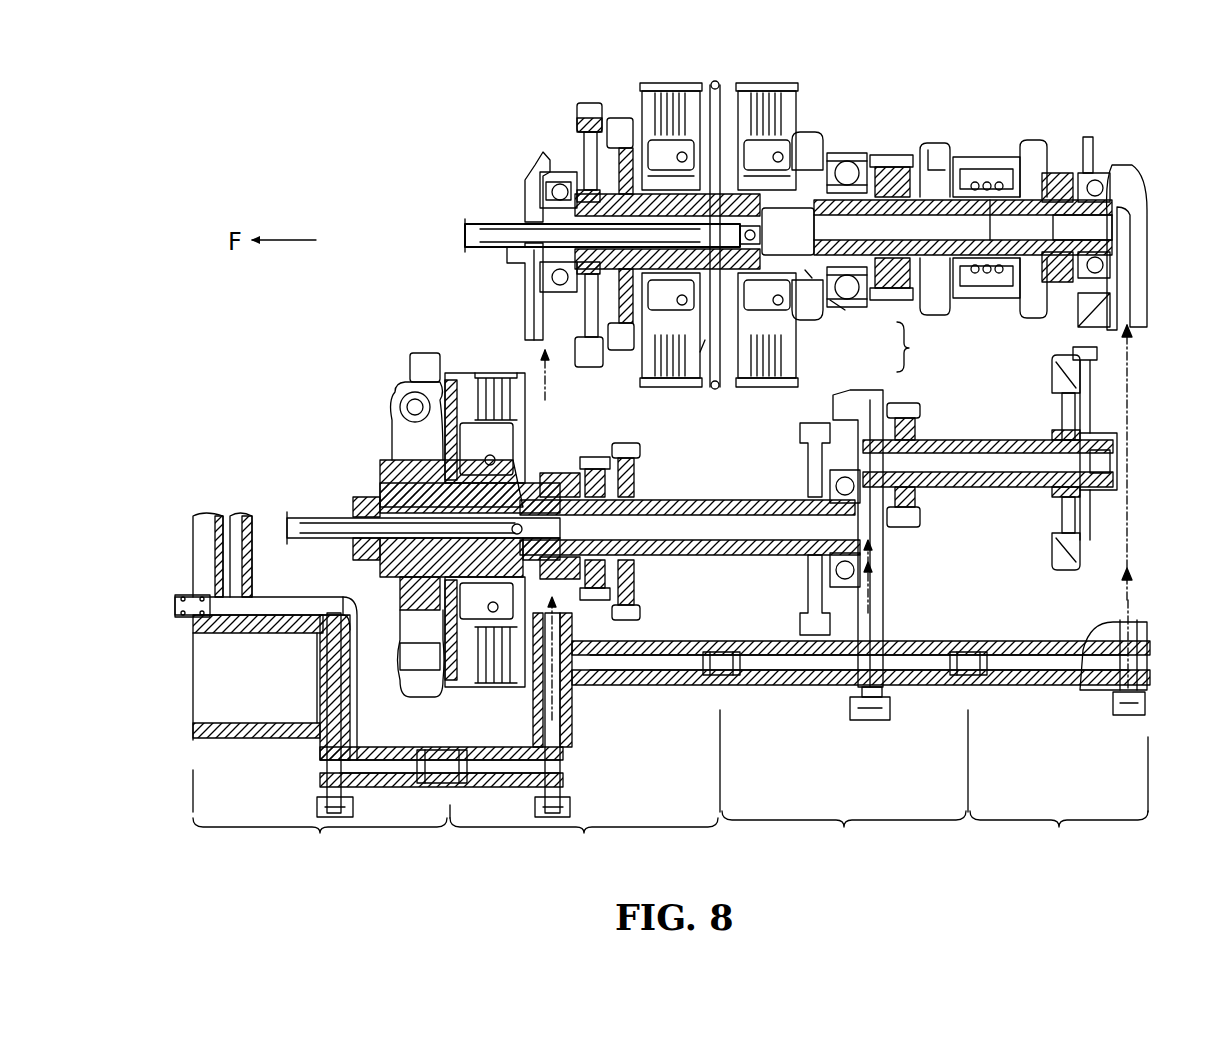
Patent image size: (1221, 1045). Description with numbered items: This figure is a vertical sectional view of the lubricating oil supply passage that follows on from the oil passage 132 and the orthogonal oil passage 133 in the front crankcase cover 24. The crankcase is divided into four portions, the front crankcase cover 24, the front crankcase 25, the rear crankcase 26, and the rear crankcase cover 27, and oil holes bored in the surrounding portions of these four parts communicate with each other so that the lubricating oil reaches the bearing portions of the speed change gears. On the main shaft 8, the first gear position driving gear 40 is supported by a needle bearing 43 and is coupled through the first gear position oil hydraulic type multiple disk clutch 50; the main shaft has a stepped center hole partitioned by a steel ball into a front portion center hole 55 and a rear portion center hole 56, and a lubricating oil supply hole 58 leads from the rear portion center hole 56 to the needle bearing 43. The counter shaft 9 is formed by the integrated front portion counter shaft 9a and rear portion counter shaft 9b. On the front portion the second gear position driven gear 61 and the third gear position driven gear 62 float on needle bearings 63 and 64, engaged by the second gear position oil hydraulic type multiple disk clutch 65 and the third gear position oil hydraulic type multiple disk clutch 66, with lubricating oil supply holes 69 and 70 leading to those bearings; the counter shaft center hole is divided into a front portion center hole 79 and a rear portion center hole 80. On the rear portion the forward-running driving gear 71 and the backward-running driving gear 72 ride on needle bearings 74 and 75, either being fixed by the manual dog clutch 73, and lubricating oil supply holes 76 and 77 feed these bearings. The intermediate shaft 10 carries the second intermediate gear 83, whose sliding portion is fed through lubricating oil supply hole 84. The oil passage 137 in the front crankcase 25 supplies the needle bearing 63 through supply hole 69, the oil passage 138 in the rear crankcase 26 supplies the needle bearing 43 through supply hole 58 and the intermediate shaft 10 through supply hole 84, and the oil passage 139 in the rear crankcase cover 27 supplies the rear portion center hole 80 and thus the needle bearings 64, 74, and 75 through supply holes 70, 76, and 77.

The main shaft 8 is at (730, 507).
The counter shaft 9 is at (910, 347).
The front portion counter shaft 9a is at (810, 278).
The rear portion counter shaft 9b is at (850, 312).
The intermediate shaft 10 is at (997, 450).
The front crankcase cover 24 is at (378, 735).
The front crankcase 25 is at (800, 727).
The rear crankcase 26 is at (845, 781).
The rear crankcase cover 27 is at (1059, 795).
The first gear position driving gear 40 is at (593, 462).
The needle bearing 43 is at (543, 480).
The first gear position oil hydraulic type multiple disk clutch 50 is at (483, 362).
The front portion center hole 55 is at (403, 530).
The rear portion center hole 56 is at (767, 523).
The lubricating oil supply hole 58 is at (543, 542).
The second gear position driven gear 61 is at (638, 197).
The third gear position driven gear 62 is at (835, 160).
The needle bearing 63 is at (630, 192).
The needle bearing 64 is at (818, 172).
The second gear position oil hydraulic type multiple disk clutch 65 is at (632, 101).
The third gear position oil hydraulic type multiple disk clutch 66 is at (789, 110).
The lubricating oil supply hole 69 is at (575, 205).
The lubricating oil supply hole 70 is at (639, 231).
The forward-running driving gear 71 is at (897, 160).
The backward-running driving gear 72 is at (1060, 172).
The manual dog clutch 73 is at (1013, 158).
The needle bearing 74 is at (983, 168).
The needle bearing 75 is at (1100, 173).
The lubricating oil supply hole 76 is at (913, 205).
The lubricating oil supply hole 77 is at (1053, 205).
The front portion center hole 79 is at (700, 352).
The rear portion center hole 80 is at (987, 227).
The second intermediate gear 83 is at (905, 405).
The lubricating oil supply hole 84 is at (960, 470).
The oil passage 132 is at (232, 537).
The oil passage 133 is at (260, 605).
The oil passage 137 is at (530, 291).
The oil passage 138 is at (867, 617).
The oil passage 139 is at (1125, 273).